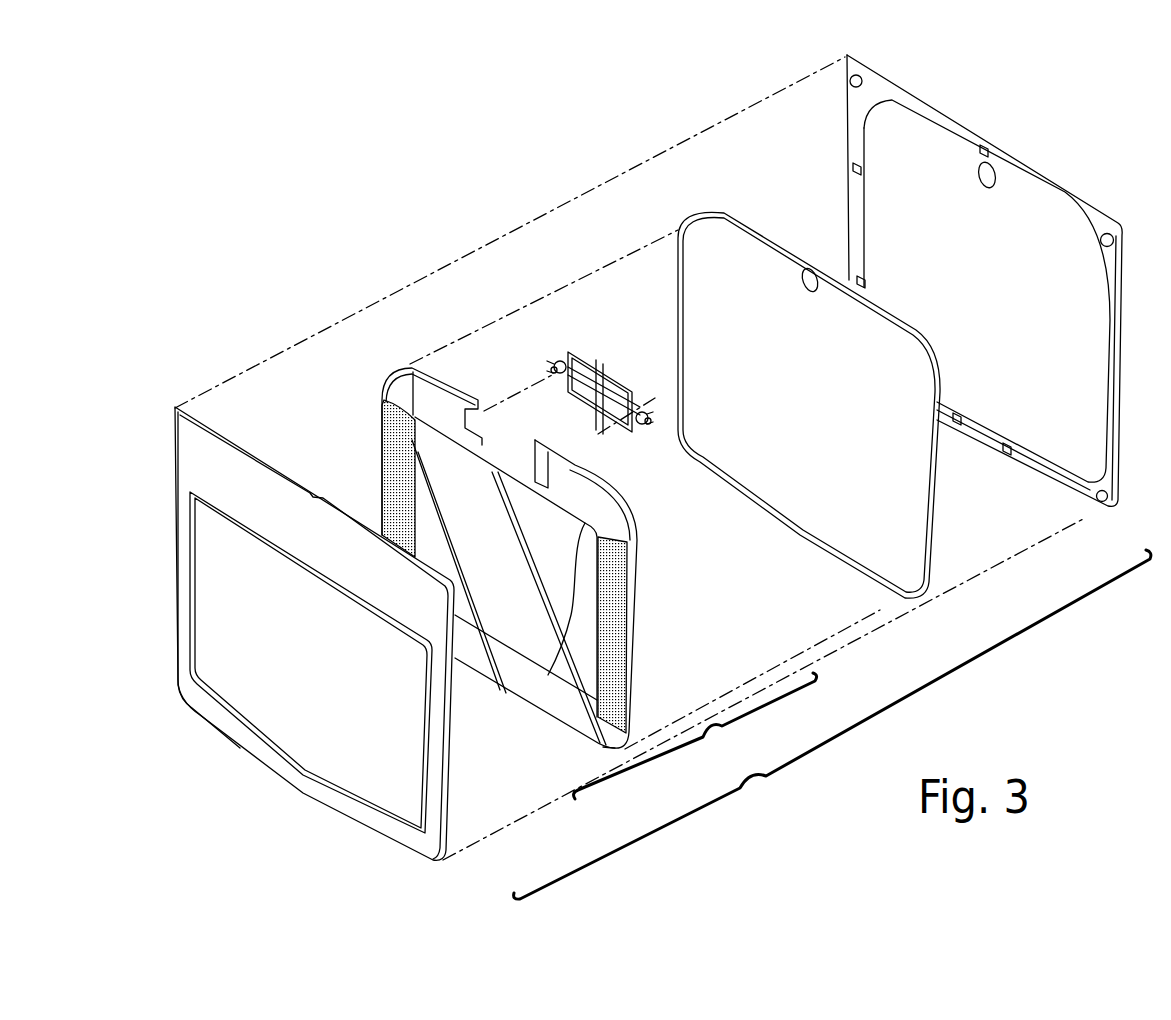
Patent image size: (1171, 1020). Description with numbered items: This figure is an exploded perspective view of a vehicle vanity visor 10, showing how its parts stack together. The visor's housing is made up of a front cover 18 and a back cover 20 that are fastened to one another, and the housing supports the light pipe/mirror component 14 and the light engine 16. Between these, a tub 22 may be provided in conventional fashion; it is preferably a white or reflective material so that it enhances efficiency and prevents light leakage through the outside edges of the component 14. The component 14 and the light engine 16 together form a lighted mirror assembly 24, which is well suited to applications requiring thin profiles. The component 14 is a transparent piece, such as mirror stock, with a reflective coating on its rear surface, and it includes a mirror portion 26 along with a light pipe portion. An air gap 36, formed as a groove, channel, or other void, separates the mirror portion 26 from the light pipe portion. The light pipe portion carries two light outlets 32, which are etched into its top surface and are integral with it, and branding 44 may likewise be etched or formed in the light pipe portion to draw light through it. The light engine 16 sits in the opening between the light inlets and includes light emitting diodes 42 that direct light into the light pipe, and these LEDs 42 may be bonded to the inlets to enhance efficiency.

The vehicle vanity visor 10 is at (770, 784).
The light pipe/mirror component 14 is at (686, 630).
The light engine 16 is at (601, 367).
The front cover 18 is at (263, 774).
The back cover 20 is at (1040, 160).
The tub 22 is at (794, 405).
The lighted mirror assembly 24 is at (718, 744).
The mirror portion 26 is at (504, 559).
The light outlets 32 is at (385, 466).
The air gap 36 is at (597, 577).
The light emitting diodes 42 is at (553, 366).
The branding 44 is at (498, 665).